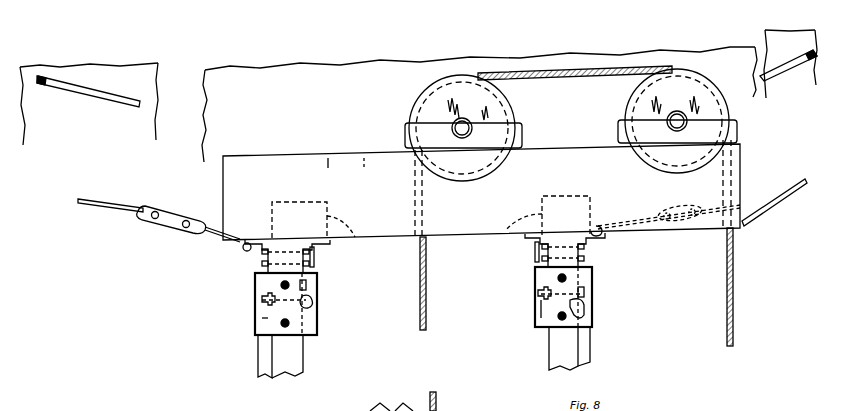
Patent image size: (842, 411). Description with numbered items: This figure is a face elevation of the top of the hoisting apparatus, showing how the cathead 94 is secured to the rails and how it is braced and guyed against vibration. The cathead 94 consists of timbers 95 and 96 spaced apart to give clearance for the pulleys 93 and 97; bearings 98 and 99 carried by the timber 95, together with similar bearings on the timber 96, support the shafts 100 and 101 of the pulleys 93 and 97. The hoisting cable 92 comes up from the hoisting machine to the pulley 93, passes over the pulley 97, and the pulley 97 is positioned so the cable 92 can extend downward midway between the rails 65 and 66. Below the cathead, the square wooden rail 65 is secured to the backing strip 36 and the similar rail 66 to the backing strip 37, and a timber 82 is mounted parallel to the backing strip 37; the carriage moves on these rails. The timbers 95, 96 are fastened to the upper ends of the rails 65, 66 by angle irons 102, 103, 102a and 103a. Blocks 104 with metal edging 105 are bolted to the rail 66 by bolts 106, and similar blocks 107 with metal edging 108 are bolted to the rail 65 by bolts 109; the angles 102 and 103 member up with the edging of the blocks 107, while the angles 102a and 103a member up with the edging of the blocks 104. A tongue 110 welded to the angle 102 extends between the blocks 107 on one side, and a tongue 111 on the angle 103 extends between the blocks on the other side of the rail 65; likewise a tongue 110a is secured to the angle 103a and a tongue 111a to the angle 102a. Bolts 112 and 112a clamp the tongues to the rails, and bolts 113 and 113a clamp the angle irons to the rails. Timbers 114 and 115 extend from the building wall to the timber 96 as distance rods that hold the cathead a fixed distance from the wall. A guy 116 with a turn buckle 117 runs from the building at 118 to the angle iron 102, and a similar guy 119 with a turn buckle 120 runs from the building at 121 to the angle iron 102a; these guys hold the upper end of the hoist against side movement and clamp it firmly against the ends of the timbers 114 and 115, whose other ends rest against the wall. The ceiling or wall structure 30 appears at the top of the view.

The ceiling 30 is at (207, 100).
The backing strip 36 is at (262, 355).
The backing strip 37 is at (585, 348).
The square wooden rail 65 is at (298, 360).
The rail 66 is at (556, 344).
The timber 82 is at (425, 410).
The hoisting cable 92 is at (426, 310).
The pulley 93 is at (706, 92).
The cathead 94 is at (303, 156).
The timber 95 is at (328, 158).
The timber 96 is at (364, 158).
The pulley 97 is at (436, 92).
The bearing 98 is at (520, 136).
The bearing 99 is at (620, 128).
The shaft 100 is at (672, 114).
The shaft 101 is at (468, 123).
The angle iron 102 is at (253, 250).
The angle iron 102a is at (596, 248).
The angle iron 103 is at (322, 245).
The angle iron 103a is at (535, 250).
The block 104 is at (590, 305).
The metal edging 105 is at (540, 306).
The bolt 106 is at (559, 279).
The block 107 is at (320, 316).
The metal edging 108 is at (282, 322).
The bolt 109 is at (282, 286).
The tongue 110 is at (262, 283).
The tongue 110a is at (538, 292).
The tongue 111 is at (308, 285).
The tongue 111a is at (582, 282).
The bolt 112 is at (314, 305).
The bolt 112a is at (590, 318).
The bolt 113 is at (283, 258).
The bolt 113a is at (563, 258).
The timber 114 is at (355, 237).
The timber 115 is at (505, 231).
The guy 116 is at (105, 200).
The turn buckle 117 is at (172, 209).
The building attachment 118 is at (45, 76).
The guy 119 is at (763, 198).
The turn buckle 120 is at (668, 226).
The building attachment 121 is at (790, 50).